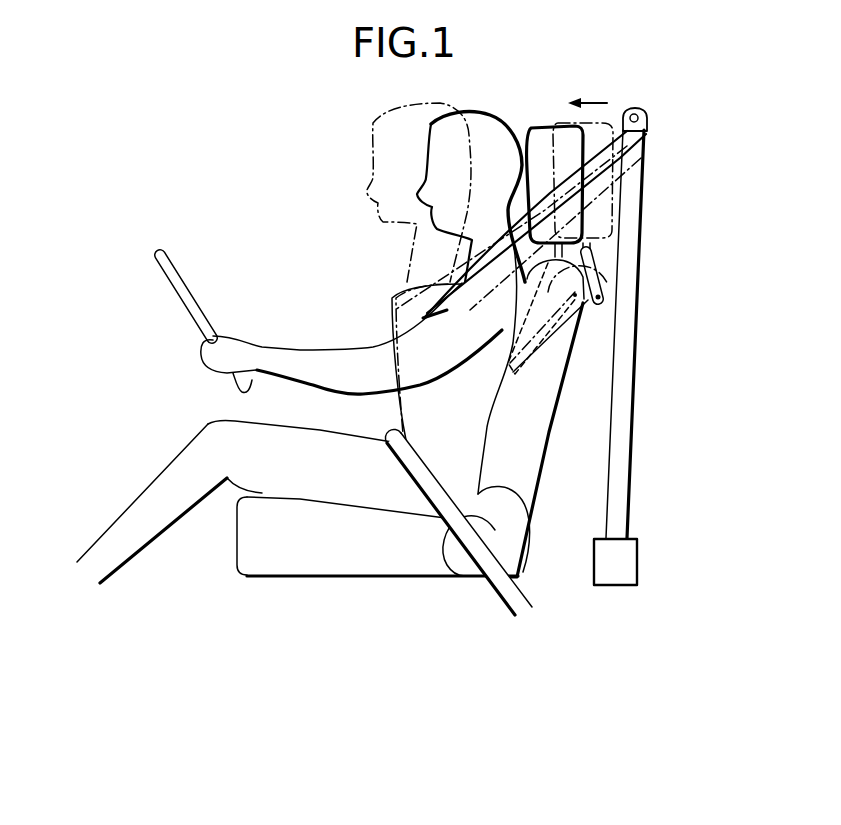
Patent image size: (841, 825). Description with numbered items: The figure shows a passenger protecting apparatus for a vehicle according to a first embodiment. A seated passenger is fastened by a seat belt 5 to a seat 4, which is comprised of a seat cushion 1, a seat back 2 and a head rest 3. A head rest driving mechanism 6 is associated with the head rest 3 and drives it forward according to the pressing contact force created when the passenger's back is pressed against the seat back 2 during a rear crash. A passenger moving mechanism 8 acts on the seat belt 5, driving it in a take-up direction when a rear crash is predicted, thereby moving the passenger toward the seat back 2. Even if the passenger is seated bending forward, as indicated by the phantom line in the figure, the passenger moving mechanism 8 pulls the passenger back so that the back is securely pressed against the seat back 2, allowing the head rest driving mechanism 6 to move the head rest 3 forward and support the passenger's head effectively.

The seat cushion 1 is at (337, 566).
The seat back 2 is at (535, 457).
The head rest 3 is at (552, 125).
The seat 4 is at (418, 590).
The seat belt 5 is at (637, 343).
The head rest driving mechanism 6 is at (594, 312).
The passenger moving mechanism 8 is at (628, 560).